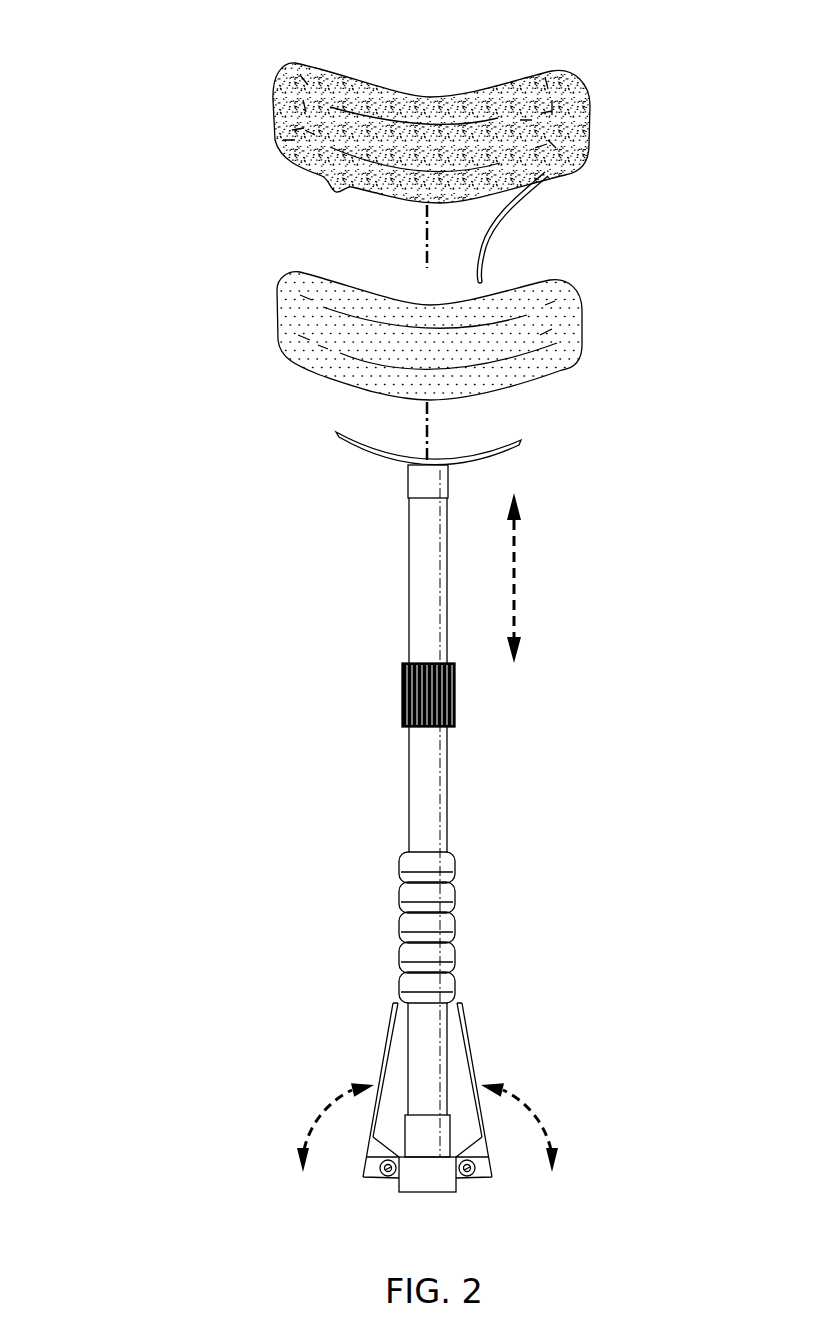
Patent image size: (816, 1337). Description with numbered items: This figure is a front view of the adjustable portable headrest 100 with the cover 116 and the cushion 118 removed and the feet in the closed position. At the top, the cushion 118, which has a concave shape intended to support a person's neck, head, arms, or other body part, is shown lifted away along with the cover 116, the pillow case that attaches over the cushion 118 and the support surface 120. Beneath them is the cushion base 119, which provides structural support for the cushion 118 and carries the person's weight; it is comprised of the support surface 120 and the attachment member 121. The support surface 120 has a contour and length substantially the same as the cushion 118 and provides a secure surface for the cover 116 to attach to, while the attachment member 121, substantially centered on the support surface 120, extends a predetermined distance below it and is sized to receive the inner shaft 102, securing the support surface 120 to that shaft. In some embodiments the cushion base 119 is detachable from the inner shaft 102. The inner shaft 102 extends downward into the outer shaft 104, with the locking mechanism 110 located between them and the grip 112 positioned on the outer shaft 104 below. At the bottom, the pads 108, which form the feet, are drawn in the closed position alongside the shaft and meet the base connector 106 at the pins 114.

The adjustable portable headrest 100 is at (188, 43).
The cover 116 is at (589, 106).
The cushion 118 is at (581, 314).
The cushion base 119 is at (282, 444).
The support surface 120 is at (521, 441).
The attachment member 121 is at (408, 482).
The inner shaft 102 is at (409, 594).
The locking mechanism 110 is at (401, 697).
The outer shaft 104 is at (409, 781).
The grip 112 is at (456, 890).
The pads 108 is at (392, 1028).
The pins 114 is at (383, 1176).
The base connector 106 is at (411, 1201).